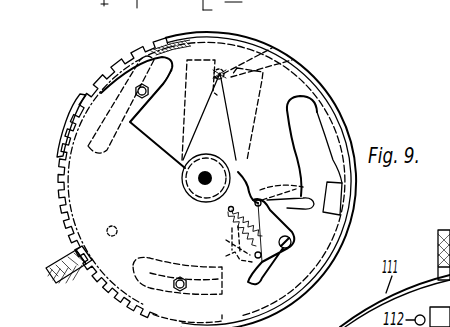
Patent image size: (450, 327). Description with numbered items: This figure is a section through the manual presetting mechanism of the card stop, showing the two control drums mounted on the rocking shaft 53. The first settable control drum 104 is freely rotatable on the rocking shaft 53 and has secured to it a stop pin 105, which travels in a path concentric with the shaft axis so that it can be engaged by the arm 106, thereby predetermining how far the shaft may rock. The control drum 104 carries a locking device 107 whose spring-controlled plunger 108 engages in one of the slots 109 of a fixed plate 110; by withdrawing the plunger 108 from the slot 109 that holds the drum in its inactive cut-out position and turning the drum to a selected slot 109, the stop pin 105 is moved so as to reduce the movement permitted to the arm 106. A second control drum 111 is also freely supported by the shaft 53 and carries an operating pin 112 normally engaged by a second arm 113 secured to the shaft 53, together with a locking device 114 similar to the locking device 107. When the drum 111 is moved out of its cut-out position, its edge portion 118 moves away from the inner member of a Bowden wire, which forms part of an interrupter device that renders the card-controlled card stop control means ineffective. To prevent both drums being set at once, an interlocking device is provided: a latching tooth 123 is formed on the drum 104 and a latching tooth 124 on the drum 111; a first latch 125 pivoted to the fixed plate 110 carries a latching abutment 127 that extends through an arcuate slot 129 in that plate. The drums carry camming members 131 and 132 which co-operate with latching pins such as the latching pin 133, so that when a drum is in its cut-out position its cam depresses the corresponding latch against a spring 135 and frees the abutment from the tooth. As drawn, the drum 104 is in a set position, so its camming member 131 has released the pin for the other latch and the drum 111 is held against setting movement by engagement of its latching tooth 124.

The rocking shaft 53 is at (199, 183).
The first settable control drum 104 is at (131, 308).
The stop pin 105 is at (115, 228).
The arm 106 is at (302, 77).
The locking device 107 is at (80, 286).
The spring-controlled plunger 108 is at (88, 252).
The slots 109 is at (72, 102).
The fixed plate 110 is at (59, 177).
The second control drum 111 is at (336, 113).
The operating pin 112 is at (287, 60).
The second arm 113 is at (268, 49).
The locking device 114 is at (438, 260).
The edge portion 118 is at (331, 212).
The latching tooth 123 is at (177, 275).
The latching tooth 124 is at (298, 195).
The first latch 125 is at (232, 250).
The latching abutment 127 is at (237, 267).
The arcuate slot 129 is at (305, 205).
The camming member 131 is at (226, 214).
The camming member 132 is at (271, 197).
The latching pin 133 is at (259, 200).
The spring 135 is at (226, 230).